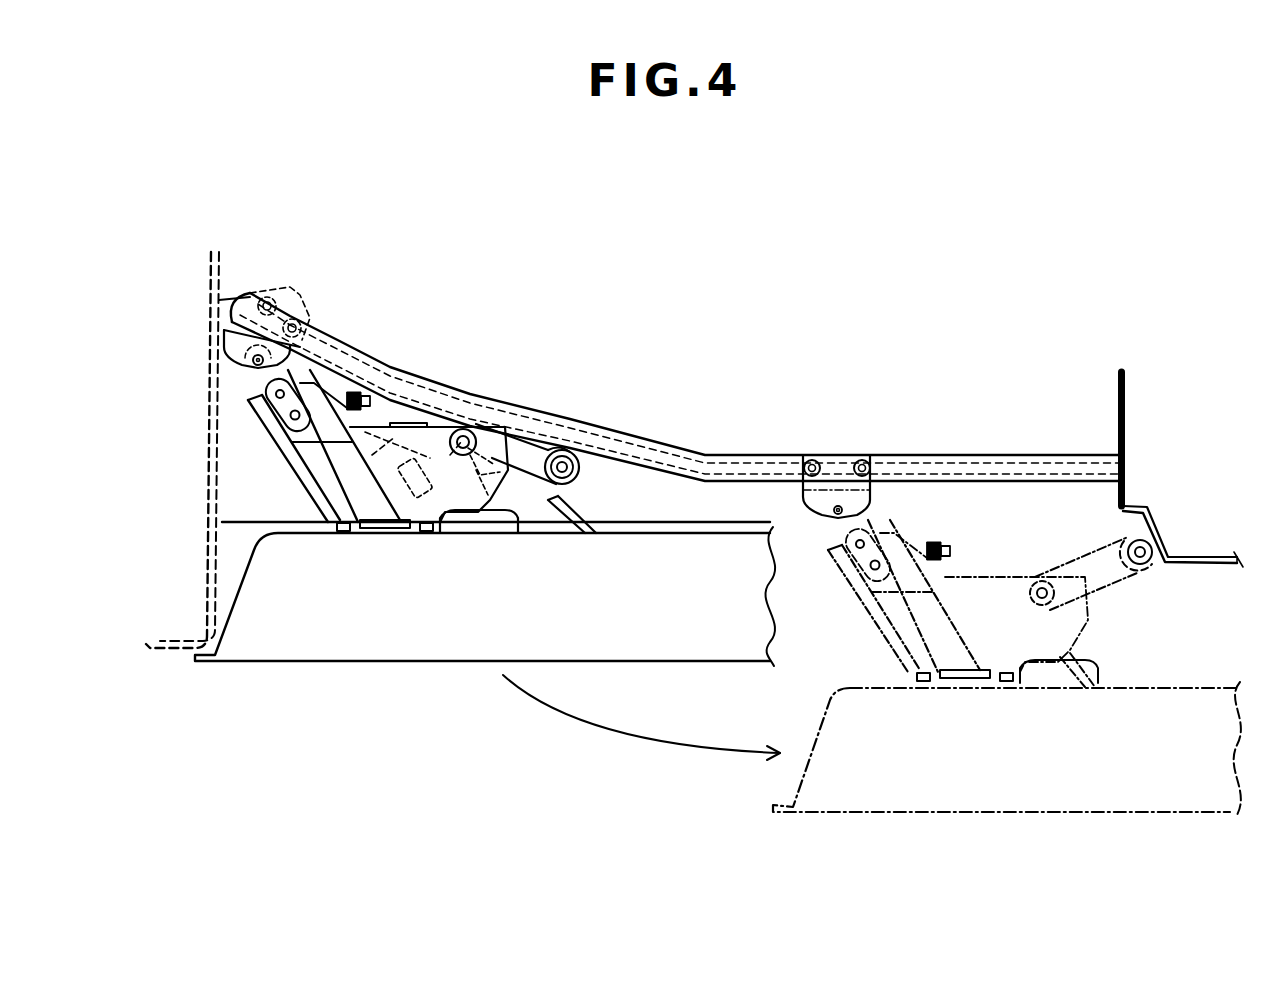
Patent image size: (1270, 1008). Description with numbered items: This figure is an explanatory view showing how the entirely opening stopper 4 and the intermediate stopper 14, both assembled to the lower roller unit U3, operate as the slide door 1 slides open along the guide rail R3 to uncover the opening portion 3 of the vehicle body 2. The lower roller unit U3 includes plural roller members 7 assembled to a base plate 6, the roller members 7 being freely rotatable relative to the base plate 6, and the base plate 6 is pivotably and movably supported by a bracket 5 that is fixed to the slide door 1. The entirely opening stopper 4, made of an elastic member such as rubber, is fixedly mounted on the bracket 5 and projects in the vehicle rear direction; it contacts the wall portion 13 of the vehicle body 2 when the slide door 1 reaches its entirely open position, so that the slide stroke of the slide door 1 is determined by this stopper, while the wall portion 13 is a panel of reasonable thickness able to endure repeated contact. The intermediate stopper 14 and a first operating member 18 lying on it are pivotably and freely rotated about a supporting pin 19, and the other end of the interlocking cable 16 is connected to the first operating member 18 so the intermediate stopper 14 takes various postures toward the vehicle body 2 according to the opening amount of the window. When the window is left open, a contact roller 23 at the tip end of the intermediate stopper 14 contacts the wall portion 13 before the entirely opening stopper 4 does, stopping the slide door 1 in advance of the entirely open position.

The slide door 1 is at (346, 661).
The vehicle body 2 is at (176, 652).
The opening portion 3 is at (1116, 362).
The entirely opening stopper 4 is at (372, 400).
The bracket 5 is at (315, 486).
The base plate 6 is at (236, 340).
The roller members 7 is at (296, 290).
The wall portion 13 is at (1160, 522).
The intermediate stopper 14 is at (530, 470).
The interlocking cable 16 is at (482, 533).
The first operating member 18 is at (368, 473).
The supporting pin 19 is at (466, 426).
The contact roller 23 is at (585, 478).
The lower roller unit U3 is at (236, 366).
The guide rail R3 is at (716, 460).